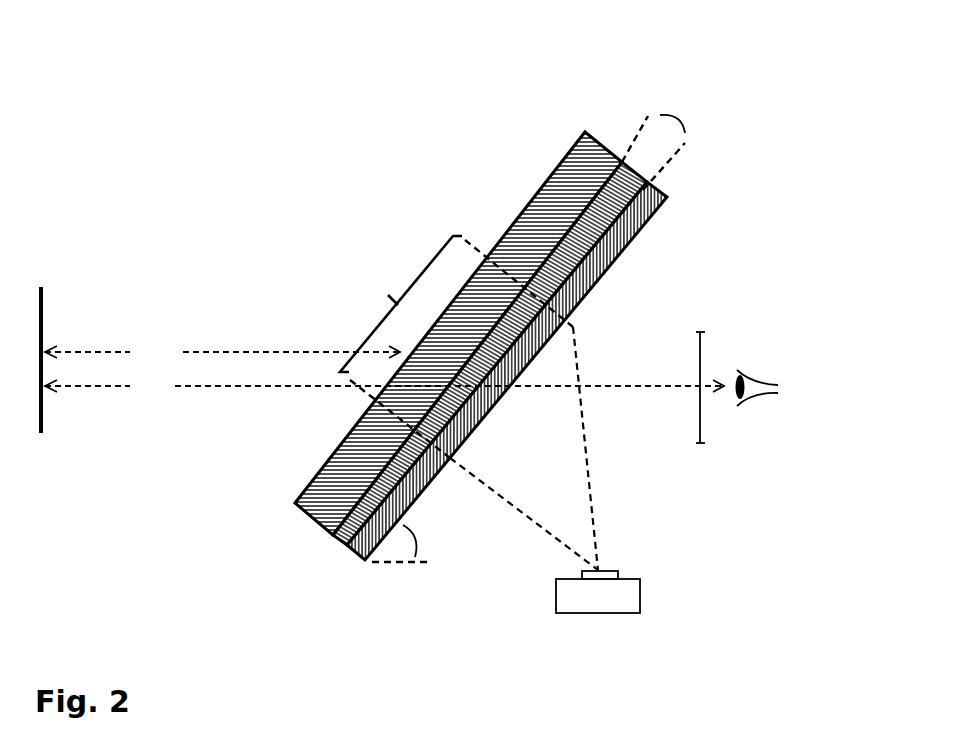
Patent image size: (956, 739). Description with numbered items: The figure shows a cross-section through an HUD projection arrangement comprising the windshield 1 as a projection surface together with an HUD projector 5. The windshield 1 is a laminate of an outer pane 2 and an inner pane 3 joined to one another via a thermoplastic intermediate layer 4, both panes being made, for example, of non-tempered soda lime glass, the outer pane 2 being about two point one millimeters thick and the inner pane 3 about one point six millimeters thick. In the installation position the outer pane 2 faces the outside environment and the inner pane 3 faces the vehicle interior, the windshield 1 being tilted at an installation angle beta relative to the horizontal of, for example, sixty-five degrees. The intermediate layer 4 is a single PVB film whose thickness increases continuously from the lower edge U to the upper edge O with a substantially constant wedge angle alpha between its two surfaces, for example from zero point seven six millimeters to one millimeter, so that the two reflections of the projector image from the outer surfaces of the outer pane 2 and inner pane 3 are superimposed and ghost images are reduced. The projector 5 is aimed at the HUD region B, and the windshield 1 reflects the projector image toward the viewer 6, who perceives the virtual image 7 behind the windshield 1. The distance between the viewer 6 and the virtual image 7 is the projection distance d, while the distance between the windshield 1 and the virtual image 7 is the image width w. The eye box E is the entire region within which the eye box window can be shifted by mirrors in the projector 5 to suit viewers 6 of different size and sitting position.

The windshield 1 is at (545, 293).
The outer pane 2 is at (533, 210).
The inner pane 3 is at (648, 208).
The thermoplastic intermediate layer 4 is at (625, 200).
The HUD projector 5 is at (620, 598).
The viewer 6 is at (775, 369).
The virtual image 7 is at (43, 300).
The upper edge O is at (617, 116).
The lower edge U is at (325, 563).
The eye box E is at (712, 350).
The HUD region B is at (456, 347).
The image width w is at (222, 352).
The projection distance d is at (384, 386).
The wedge angle alpha is at (660, 143).
The installation angle beta is at (402, 542).